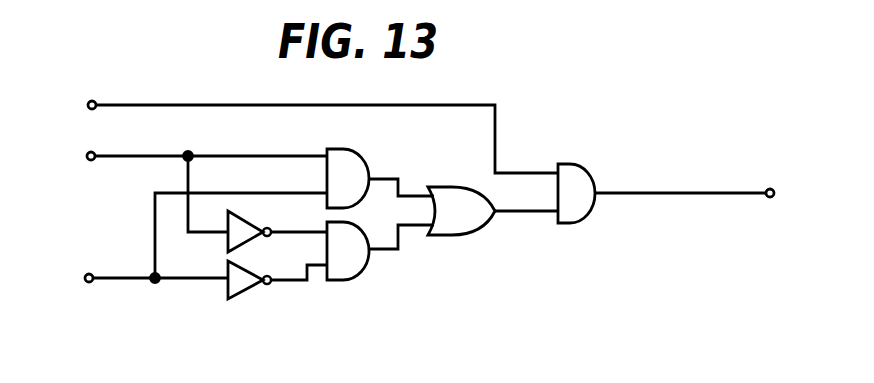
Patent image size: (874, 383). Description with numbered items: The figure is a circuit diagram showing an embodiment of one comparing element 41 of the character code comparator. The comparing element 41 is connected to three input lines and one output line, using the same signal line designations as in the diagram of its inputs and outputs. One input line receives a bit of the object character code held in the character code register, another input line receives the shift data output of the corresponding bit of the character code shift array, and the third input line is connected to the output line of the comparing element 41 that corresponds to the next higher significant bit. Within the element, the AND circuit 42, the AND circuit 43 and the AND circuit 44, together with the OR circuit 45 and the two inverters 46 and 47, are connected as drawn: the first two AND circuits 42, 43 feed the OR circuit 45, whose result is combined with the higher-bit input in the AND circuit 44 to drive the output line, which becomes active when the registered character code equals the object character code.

The comparing element 41 is at (648, 73).
The AND circuit 42 is at (366, 170).
The AND circuit 43 is at (357, 283).
The AND circuit 44 is at (596, 183).
The OR circuit 45 is at (467, 235).
The inverter 46 is at (253, 227).
The inverter 47 is at (251, 275).